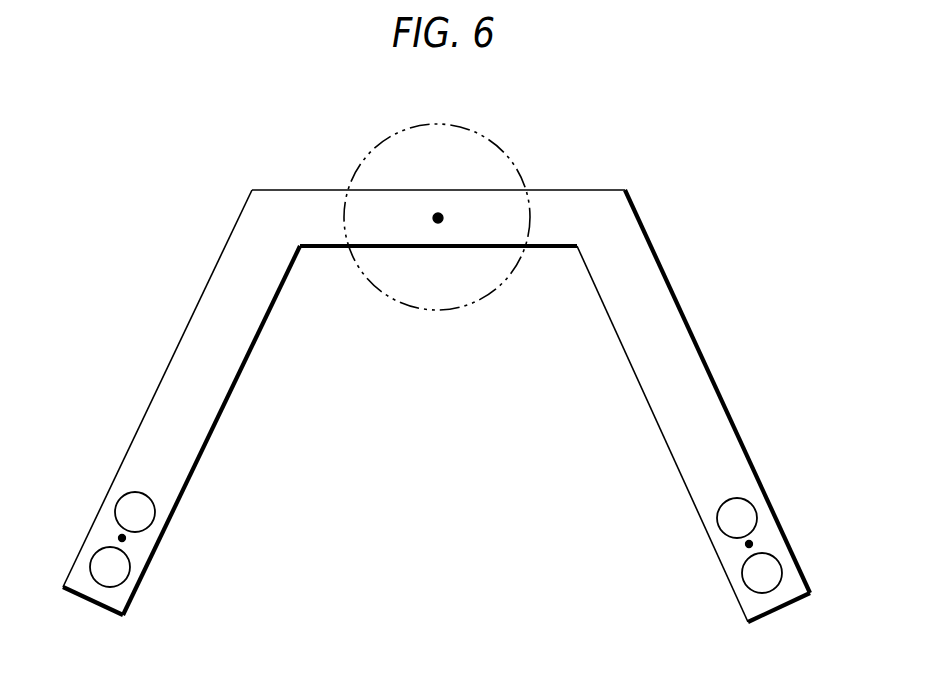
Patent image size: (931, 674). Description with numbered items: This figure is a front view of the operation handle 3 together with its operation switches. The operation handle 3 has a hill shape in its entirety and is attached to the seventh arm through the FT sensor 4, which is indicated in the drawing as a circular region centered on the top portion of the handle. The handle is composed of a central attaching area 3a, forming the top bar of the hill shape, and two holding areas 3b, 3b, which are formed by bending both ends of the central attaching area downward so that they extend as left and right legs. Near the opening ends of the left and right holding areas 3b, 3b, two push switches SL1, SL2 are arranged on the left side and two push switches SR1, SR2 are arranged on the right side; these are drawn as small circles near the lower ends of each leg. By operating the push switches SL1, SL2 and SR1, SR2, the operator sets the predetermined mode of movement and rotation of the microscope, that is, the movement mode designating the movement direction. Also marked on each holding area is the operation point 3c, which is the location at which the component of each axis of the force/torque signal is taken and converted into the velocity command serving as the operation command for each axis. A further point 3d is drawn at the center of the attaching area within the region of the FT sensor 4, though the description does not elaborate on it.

The operation handle 3 is at (439, 406).
The central attaching area 3a is at (550, 235).
The holding areas 3b is at (188, 440).
The operation point 3c is at (115, 535).
The center point 3d is at (438, 223).
The FT sensor 4 is at (503, 167).
The push switch SL1 is at (145, 515).
The push switch SL2 is at (117, 572).
The push switch SR1 is at (723, 523).
The push switch SR2 is at (753, 580).